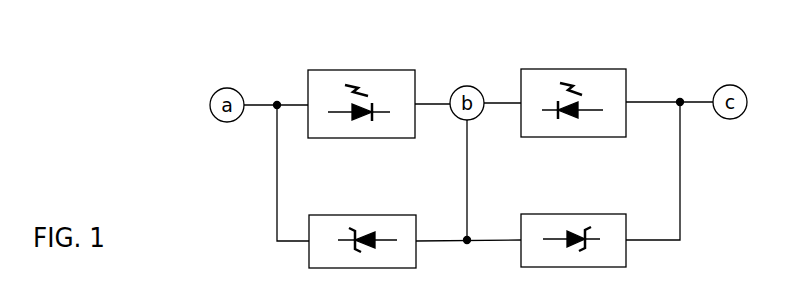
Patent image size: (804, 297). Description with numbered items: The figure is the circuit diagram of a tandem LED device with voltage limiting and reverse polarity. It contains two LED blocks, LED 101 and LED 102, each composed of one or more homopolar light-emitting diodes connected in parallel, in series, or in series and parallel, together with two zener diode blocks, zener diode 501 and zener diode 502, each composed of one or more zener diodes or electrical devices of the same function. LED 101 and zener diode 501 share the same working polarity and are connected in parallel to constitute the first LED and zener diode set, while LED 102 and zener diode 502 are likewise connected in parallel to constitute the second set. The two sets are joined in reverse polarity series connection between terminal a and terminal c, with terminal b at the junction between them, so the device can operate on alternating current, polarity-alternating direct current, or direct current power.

The LED 101 is at (343, 70).
The LED 102 is at (555, 69).
The zener diode 501 is at (340, 215).
The zener diode 502 is at (555, 214).